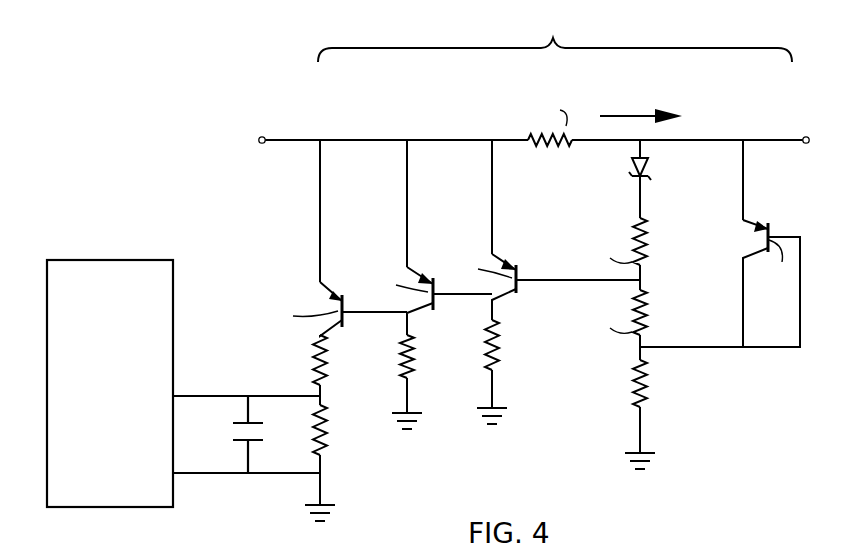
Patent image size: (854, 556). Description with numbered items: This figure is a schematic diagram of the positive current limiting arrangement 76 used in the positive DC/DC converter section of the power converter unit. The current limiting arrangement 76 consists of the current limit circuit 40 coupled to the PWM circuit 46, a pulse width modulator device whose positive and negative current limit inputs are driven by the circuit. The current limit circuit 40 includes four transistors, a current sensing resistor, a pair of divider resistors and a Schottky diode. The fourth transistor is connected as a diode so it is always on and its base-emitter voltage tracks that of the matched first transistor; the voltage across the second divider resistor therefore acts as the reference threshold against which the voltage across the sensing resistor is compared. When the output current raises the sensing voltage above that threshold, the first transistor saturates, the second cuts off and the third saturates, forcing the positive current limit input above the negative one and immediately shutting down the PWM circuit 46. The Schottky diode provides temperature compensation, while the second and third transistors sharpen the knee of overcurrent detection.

The current limit circuit 40 is at (555, 47).
The current limiting arrangement 76 is at (192, 186).
The PWM circuit 46 is at (115, 508).